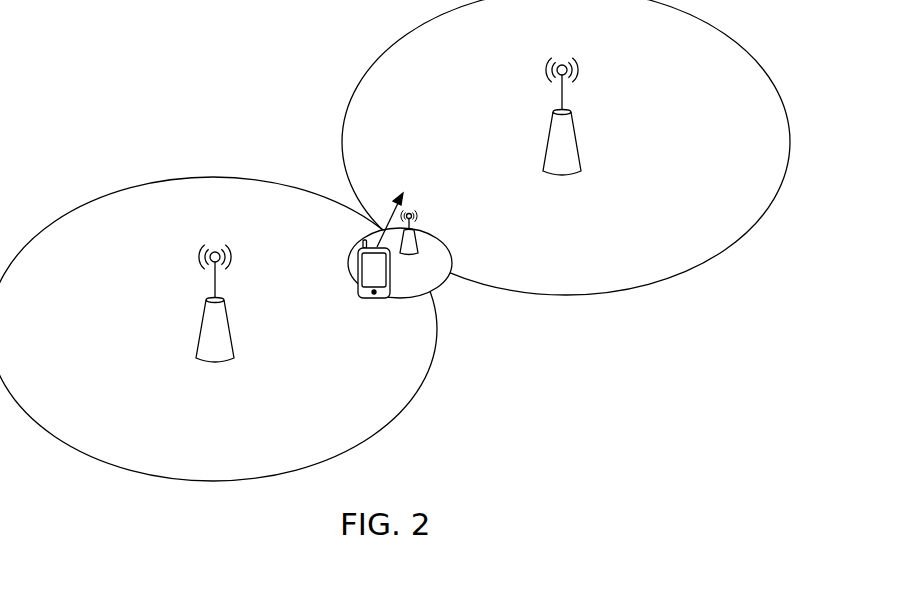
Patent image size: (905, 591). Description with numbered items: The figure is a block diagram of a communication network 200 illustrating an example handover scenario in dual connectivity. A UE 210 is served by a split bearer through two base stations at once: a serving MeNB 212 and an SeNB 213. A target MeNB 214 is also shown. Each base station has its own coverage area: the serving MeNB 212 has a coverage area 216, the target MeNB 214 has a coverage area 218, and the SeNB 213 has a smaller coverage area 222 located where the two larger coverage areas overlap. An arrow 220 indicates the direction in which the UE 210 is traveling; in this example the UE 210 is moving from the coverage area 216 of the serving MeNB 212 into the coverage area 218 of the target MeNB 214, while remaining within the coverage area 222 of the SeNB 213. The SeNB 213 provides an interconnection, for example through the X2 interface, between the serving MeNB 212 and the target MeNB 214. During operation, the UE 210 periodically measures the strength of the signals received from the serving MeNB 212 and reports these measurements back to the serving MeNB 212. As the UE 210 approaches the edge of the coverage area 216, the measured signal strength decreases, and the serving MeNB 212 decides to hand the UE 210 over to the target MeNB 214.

The communication network 200 is at (208, 40).
The UE 210 is at (357, 298).
The serving MeNB 212 is at (201, 322).
The SeNB 213 is at (427, 229).
The target MeNB 214 is at (575, 120).
The coverage area of the serving MeNB 216 is at (375, 437).
The coverage area of the target MeNB 218 is at (718, 255).
The arrow 220 is at (390, 222).
The coverage area of the SeNB 222 is at (440, 287).